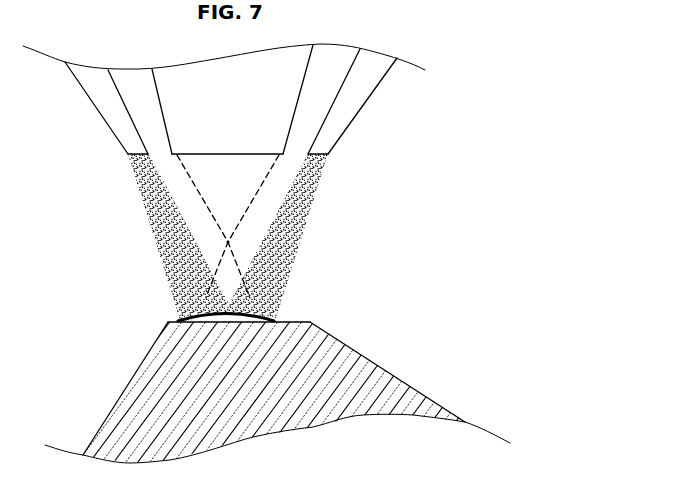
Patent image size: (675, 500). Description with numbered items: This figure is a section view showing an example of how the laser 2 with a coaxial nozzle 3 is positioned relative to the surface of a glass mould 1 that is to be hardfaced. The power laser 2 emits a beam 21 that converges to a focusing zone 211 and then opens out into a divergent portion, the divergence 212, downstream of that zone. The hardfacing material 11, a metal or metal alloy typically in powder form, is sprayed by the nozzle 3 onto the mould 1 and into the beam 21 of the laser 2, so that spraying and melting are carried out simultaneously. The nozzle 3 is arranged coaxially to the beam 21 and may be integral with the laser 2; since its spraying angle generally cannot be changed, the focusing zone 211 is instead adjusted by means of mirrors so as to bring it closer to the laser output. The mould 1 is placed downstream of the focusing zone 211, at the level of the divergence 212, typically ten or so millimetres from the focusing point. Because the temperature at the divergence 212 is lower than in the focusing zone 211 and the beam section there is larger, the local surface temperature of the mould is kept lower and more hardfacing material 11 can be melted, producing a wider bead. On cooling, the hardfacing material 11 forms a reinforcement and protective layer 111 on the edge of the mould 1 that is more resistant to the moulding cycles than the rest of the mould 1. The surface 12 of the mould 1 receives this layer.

The mould 1 is at (375, 362).
The power laser 2 is at (234, 118).
The nozzle 3 is at (120, 118).
The hardfacing material 11 is at (155, 240).
The upper surface of workpiece 12 is at (288, 322).
The beam 21 is at (317, 183).
The focusing zone 211 is at (228, 244).
The divergence 212 is at (227, 275).
The reinforcement and protective layer 111 is at (222, 328).